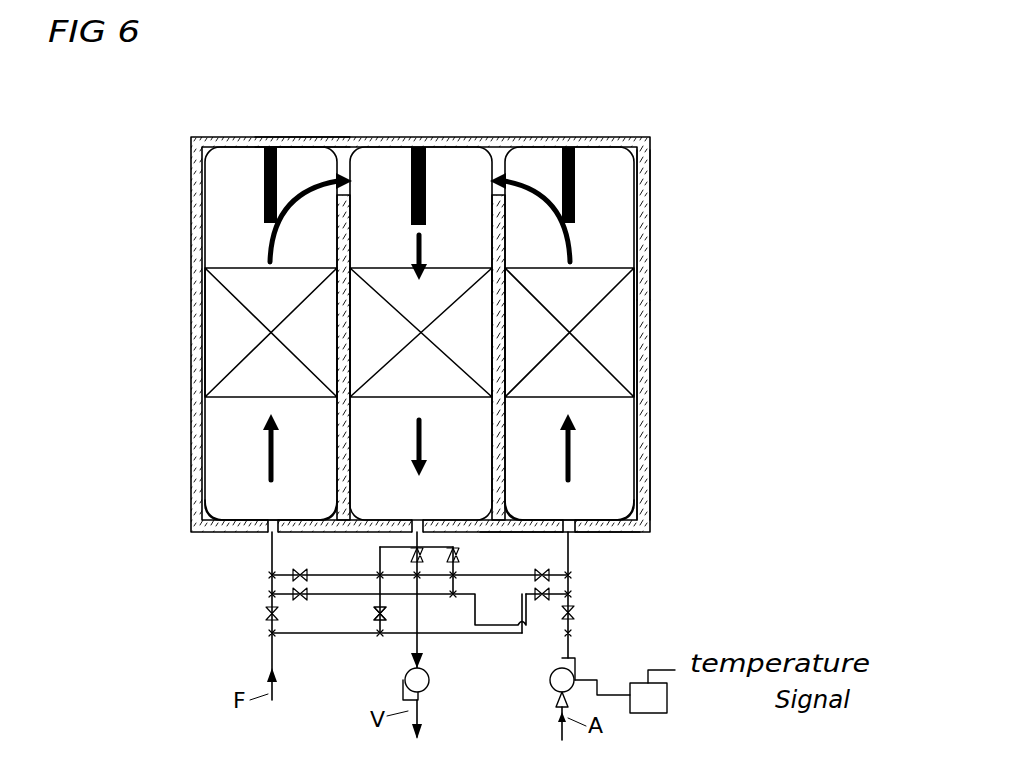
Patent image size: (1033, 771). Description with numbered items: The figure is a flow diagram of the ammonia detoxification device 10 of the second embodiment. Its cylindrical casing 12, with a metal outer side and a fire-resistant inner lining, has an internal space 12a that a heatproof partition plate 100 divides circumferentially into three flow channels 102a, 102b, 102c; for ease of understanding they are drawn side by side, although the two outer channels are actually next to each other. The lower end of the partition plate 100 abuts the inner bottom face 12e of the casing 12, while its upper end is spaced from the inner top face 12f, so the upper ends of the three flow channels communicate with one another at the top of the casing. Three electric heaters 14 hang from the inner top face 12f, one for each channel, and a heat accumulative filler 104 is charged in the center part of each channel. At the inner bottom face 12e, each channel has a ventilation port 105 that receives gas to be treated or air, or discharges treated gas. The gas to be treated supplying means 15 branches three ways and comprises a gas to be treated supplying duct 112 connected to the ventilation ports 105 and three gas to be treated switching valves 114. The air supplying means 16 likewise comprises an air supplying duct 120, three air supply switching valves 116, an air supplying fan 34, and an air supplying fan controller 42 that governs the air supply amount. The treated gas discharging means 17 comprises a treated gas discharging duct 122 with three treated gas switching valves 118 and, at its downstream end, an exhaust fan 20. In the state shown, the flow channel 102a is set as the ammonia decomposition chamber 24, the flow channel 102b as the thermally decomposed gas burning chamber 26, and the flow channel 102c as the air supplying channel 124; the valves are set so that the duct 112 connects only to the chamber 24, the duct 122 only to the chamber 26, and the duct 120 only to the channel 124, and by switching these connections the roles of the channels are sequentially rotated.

The ammonia detoxification device 10 is at (408, 309).
The casing 12 is at (455, 313).
The internal space 12a is at (313, 162).
The inner bottom face 12e is at (645, 507).
The inner top face 12f is at (640, 170).
The electric heater 14 is at (262, 198).
The ammonia decomposition chamber 24 is at (206, 297).
The thermally decomposed gas burning chamber 26 is at (345, 172).
The partition plate 100 is at (285, 485).
The flow channel 102a is at (232, 411).
The flow channel 102b is at (415, 488).
The flow channel 102c is at (600, 412).
The heat accumulative filler 104 is at (240, 345).
The ventilation port 105 is at (268, 543).
The air supplying channel 124 is at (643, 320).
The gas to be treated supplying means 15 is at (337, 641).
The air supplying means 16 is at (628, 616).
The treated gas discharging means 17 is at (369, 583).
The gas to be treated supplying duct 112 is at (269, 639).
The gas to be treated switching valve 114 is at (377, 612).
The air supply switching valve 116 is at (570, 576).
The treated gas switching valve 118 is at (410, 553).
The air supplying duct 120 is at (572, 634).
The treated gas discharging duct 122 is at (450, 560).
The exhaust fan 20 is at (430, 678).
The air supplying fan 34 is at (553, 690).
The air supplying fan controller 42 is at (651, 714).